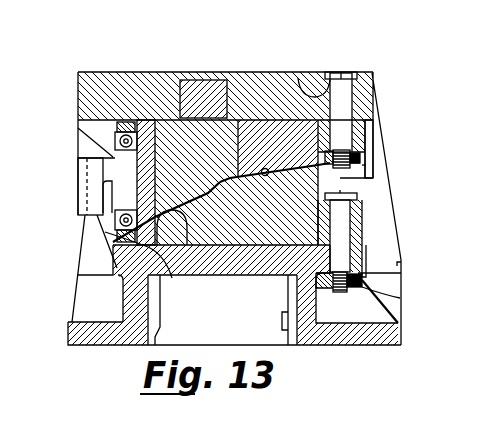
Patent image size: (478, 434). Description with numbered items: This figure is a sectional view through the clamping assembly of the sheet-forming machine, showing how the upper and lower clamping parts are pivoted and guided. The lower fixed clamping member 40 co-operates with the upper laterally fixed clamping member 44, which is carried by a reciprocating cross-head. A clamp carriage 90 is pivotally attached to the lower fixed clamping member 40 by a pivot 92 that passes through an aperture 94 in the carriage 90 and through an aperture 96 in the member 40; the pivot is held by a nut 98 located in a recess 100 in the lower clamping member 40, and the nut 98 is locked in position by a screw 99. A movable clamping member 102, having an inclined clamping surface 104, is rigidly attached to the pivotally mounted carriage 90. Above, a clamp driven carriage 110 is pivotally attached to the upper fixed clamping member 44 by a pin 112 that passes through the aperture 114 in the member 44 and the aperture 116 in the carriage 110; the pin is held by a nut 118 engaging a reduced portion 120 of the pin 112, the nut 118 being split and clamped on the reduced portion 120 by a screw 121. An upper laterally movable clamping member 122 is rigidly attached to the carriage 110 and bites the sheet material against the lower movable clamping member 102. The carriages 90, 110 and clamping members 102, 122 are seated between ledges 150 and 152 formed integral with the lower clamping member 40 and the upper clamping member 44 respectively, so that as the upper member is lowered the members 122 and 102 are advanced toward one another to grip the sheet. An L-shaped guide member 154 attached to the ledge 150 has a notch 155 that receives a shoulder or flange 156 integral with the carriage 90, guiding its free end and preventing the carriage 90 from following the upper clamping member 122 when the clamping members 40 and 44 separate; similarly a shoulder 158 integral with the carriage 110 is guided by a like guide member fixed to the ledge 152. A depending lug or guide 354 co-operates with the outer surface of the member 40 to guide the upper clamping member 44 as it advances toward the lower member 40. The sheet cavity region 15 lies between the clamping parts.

The upper laterally fixed clamping member 44 is at (78, 96).
The ledge 152 is at (115, 88).
The shoulder 158 is at (134, 125).
The L-shaped guide member 154 is at (120, 127).
The clamp carriage 90 is at (137, 165).
The notch 155 is at (107, 213).
The inclined clamping surface 104 is at (152, 257).
The lower fixed clamping member 40 is at (85, 278).
The ledge 150 is at (122, 276).
The shoulder or flange 156 is at (173, 227).
The movable clamping member 102 is at (199, 246).
The cavity 15 is at (240, 240).
The upper laterally movable clamping member 122 is at (250, 120).
The aperture 114 is at (299, 78).
The pin 112 is at (373, 79).
The clamp driven carriage 110 is at (342, 96).
The aperture 116 is at (362, 140).
The reduced portion 120 is at (363, 158).
The screw 121 is at (358, 163).
The depending lug or guide 354 is at (366, 166).
The nut 118 is at (352, 165).
The pivot 92 is at (398, 218).
The aperture 94 is at (340, 229).
The screw 99 is at (360, 278).
The nut 98 is at (401, 298).
The aperture 96 is at (320, 280).
The recess 100 is at (350, 288).